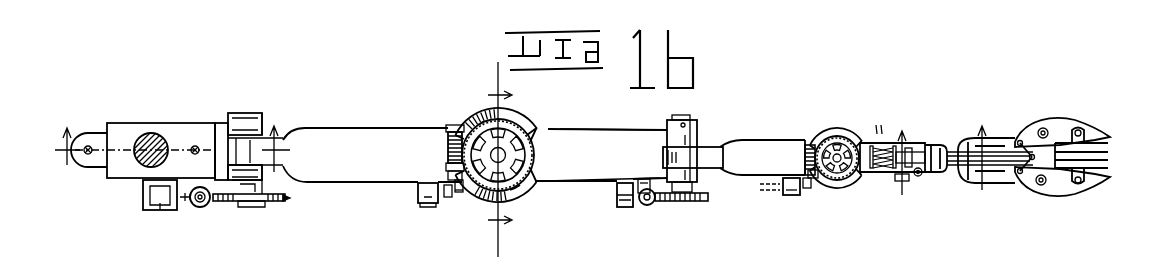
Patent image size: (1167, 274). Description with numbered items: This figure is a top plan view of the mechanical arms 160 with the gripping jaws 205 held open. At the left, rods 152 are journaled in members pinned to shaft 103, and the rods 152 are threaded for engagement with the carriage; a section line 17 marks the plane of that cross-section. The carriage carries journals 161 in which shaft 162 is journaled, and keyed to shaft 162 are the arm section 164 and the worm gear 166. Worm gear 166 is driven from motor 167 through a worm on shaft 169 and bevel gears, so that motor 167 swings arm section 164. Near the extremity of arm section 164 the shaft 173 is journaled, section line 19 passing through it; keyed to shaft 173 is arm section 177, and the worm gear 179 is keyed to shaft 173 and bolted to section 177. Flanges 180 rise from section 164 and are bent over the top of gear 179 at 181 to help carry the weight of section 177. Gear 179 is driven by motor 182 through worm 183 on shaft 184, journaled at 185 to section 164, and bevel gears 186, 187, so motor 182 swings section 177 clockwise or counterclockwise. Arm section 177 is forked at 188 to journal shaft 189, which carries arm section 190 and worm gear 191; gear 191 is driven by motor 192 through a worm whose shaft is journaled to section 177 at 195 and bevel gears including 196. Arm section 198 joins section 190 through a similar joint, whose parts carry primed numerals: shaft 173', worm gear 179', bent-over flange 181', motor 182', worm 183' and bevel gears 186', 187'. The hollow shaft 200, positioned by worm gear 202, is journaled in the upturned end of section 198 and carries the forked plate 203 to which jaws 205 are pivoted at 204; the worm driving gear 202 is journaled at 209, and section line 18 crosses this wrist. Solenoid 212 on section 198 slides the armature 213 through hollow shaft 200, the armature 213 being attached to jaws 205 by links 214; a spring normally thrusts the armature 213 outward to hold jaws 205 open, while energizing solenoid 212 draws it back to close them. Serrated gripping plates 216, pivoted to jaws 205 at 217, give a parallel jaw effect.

The section line 17- 17 is at (171, 149).
The section line 18- 18 is at (941, 167).
The section line 19- 19 is at (496, 163).
The shaft 103 is at (152, 130).
The rods 152 is at (198, 146).
The mechanical arms 160 is at (370, 184).
The journals 161 is at (228, 128).
The shaft 162 is at (250, 207).
The arm section 164 is at (365, 142).
The worm gear 166 is at (285, 205).
The motor 167 is at (160, 212).
The shaft 169 is at (201, 208).
The shaft 173 is at (525, 141).
The arm section 177 is at (598, 140).
The worm gear 179 is at (522, 155).
The flanges 180 is at (521, 196).
The bent-over portion of flanges 181 is at (507, 143).
The motor 182 is at (411, 215).
The worm 183 is at (427, 147).
The shaft 184 is at (446, 177).
The journal 185 is at (452, 125).
The bevel gear 186 is at (465, 200).
The bevel gear 187 is at (441, 210).
The fork 188 is at (700, 126).
The shaft 189 is at (718, 147).
The arm section 190 is at (752, 176).
The worm gear 191 is at (686, 202).
The motor 192 is at (619, 196).
The journal 195 is at (641, 179).
The bevel gear 196 is at (648, 206).
The arm section 198 is at (906, 145).
The hollow shaft 200 is at (962, 167).
The worm gear 202 is at (935, 147).
The forked plate 203 is at (990, 140).
The jaw pivots 204 is at (1043, 186).
The jaws 205 is at (1100, 185).
The journal 209 is at (919, 178).
The solenoid 212 is at (886, 150).
The armature 213 is at (1022, 160).
The links 214 is at (1022, 174).
The serrated gripping plates 216 is at (1108, 162).
The pivots 217 is at (1079, 184).
The shaft 173' is at (833, 136).
The worm gear 179' is at (854, 188).
The bent-over portion of flanges 181' is at (845, 142).
The motor 182' is at (772, 209).
The worm 183' is at (798, 132).
The bevel gear 186' is at (831, 197).
The bevel gear 187' is at (808, 206).